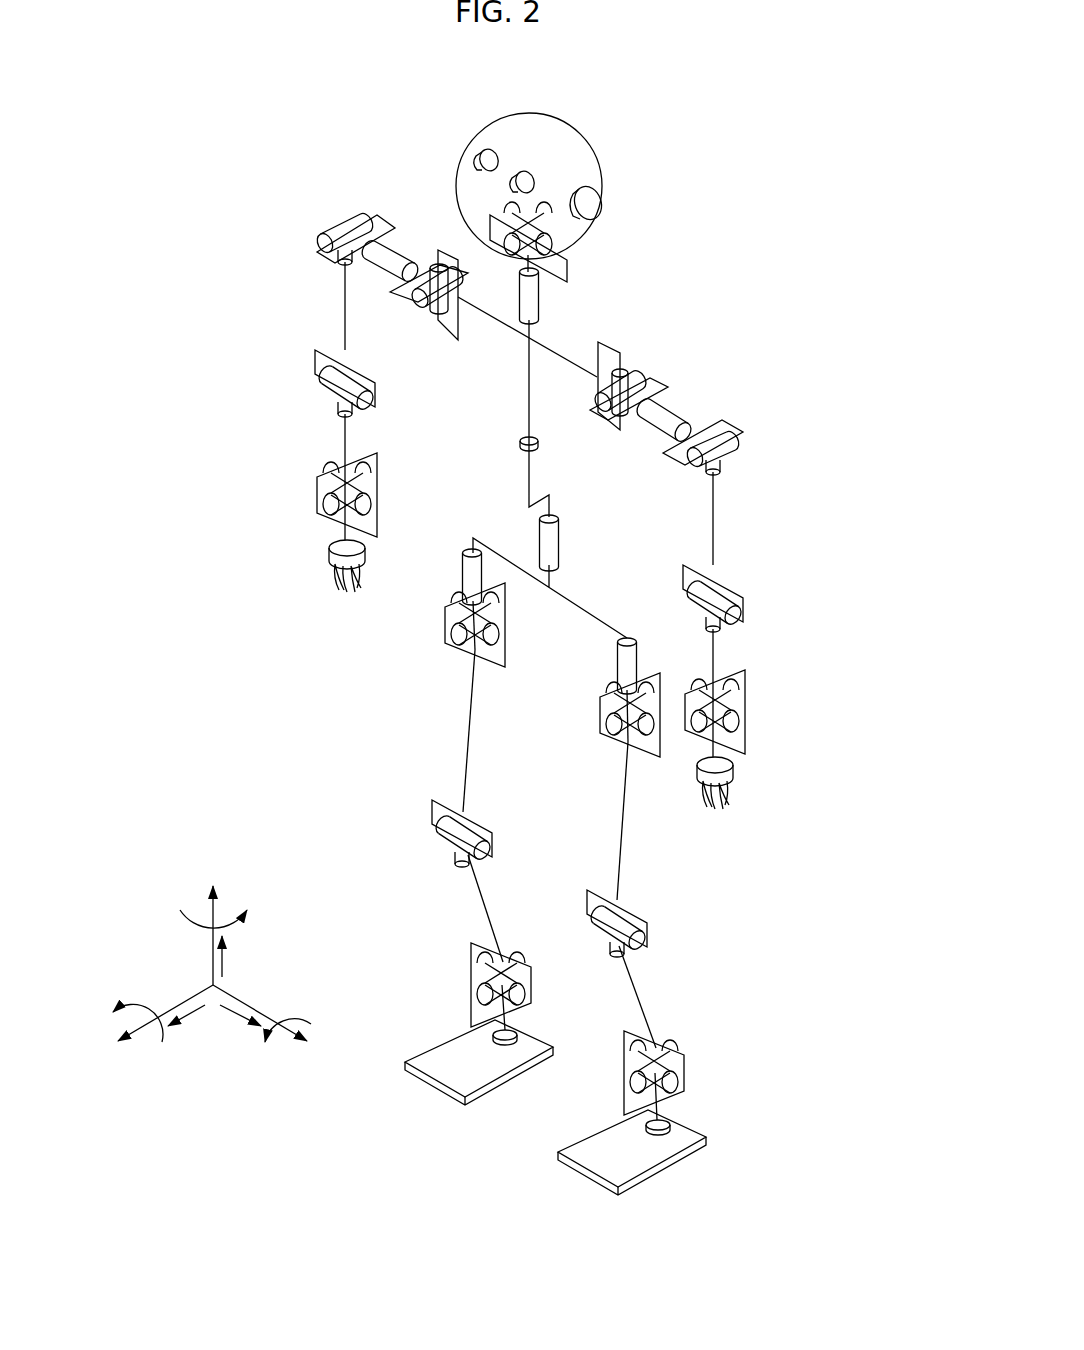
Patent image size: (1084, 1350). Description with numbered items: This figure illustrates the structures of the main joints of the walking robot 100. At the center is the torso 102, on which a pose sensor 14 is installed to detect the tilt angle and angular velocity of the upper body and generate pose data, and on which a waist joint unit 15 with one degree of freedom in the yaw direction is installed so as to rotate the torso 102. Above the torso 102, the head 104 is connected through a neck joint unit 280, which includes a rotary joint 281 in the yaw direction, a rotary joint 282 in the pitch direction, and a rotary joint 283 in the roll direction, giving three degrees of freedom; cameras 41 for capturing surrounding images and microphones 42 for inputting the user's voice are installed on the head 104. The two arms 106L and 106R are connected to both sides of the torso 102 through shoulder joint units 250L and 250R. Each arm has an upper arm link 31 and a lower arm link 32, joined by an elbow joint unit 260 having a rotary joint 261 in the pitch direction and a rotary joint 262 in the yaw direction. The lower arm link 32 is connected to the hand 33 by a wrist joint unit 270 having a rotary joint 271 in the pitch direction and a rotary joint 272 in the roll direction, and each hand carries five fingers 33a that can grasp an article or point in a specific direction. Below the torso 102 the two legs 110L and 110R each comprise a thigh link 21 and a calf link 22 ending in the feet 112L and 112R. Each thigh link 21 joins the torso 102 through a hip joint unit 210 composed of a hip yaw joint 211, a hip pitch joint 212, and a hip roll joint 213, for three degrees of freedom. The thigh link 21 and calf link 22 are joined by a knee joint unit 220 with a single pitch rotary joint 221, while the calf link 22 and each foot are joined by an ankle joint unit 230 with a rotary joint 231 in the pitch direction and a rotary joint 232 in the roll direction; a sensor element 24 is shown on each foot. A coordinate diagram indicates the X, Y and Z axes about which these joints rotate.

The robot 100 is at (802, 128).
The torso 102 is at (528, 392).
The head 104 is at (598, 140).
The right arm 106R is at (240, 376).
The left arm 106L is at (798, 578).
The right leg 110R is at (378, 774).
The left leg 110L is at (686, 868).
The right foot 112R is at (432, 1086).
The left foot 112L is at (590, 1172).
The pose sensor 14 is at (536, 450).
The waist joint unit 15 is at (553, 540).
The thigh link 21 is at (464, 745).
The calf link 22 is at (480, 905).
The force/torque sensor 24 is at (510, 1043).
The upper arm link 31 is at (344, 297).
The lower arm link 32 is at (344, 432).
The hand 33 is at (322, 566).
The fingers 33a is at (338, 588).
The cameras 41 is at (516, 186).
The microphones 42 is at (592, 205).
The hip joint unit 210 is at (438, 634).
The hip yaw joint 211 is at (464, 566).
The hip pitch joint 212 is at (500, 636).
The hip roll joint 213 is at (456, 644).
The knee joint unit 220 is at (426, 852).
The rotary joint 221 is at (480, 838).
The ankle joint unit 230 is at (462, 982).
The rotary joint 231 is at (522, 996).
The rotary joint 232 is at (514, 974).
The right shoulder joint unit 250R is at (346, 205).
The left shoulder joint unit 250L is at (680, 376).
The elbow joint unit 260 is at (304, 350).
The rotary joint 261 is at (354, 380).
The rotary joint 262 is at (352, 404).
The wrist joint unit 270 is at (306, 513).
The rotary joint 271 is at (364, 503).
The rotary joint 272 is at (364, 484).
The neck joint unit 280 is at (586, 278).
The rotary joint 281 is at (534, 300).
The rotary joint 282 is at (548, 240).
The rotary joint 283 is at (468, 243).